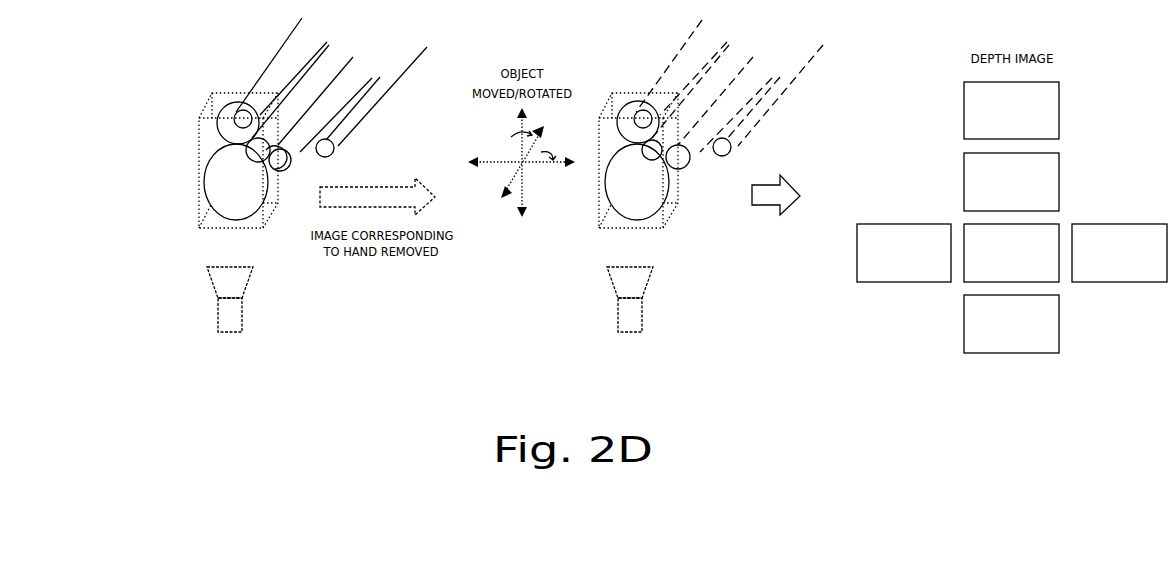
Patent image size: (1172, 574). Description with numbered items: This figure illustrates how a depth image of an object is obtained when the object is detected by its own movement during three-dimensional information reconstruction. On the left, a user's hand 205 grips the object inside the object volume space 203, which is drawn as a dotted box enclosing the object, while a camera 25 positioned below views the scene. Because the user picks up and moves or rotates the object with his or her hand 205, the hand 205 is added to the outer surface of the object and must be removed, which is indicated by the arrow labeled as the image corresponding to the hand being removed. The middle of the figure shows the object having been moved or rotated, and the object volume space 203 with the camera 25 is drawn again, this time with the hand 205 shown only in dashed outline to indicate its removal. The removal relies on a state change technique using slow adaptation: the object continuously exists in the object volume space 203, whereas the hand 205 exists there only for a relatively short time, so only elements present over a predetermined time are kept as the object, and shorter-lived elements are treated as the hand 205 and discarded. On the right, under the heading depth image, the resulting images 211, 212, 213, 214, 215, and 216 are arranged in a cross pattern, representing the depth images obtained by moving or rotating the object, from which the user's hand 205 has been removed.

The camera 25 is at (229, 332).
The object volume space 203 is at (199, 185).
The user's hand 205 is at (256, 80).
The image 211 is at (1011, 110).
The image 212 is at (1011, 182).
The image 213 is at (1011, 253).
The image 214 is at (1011, 324).
The image 215 is at (904, 253).
The image 216 is at (1119, 253).